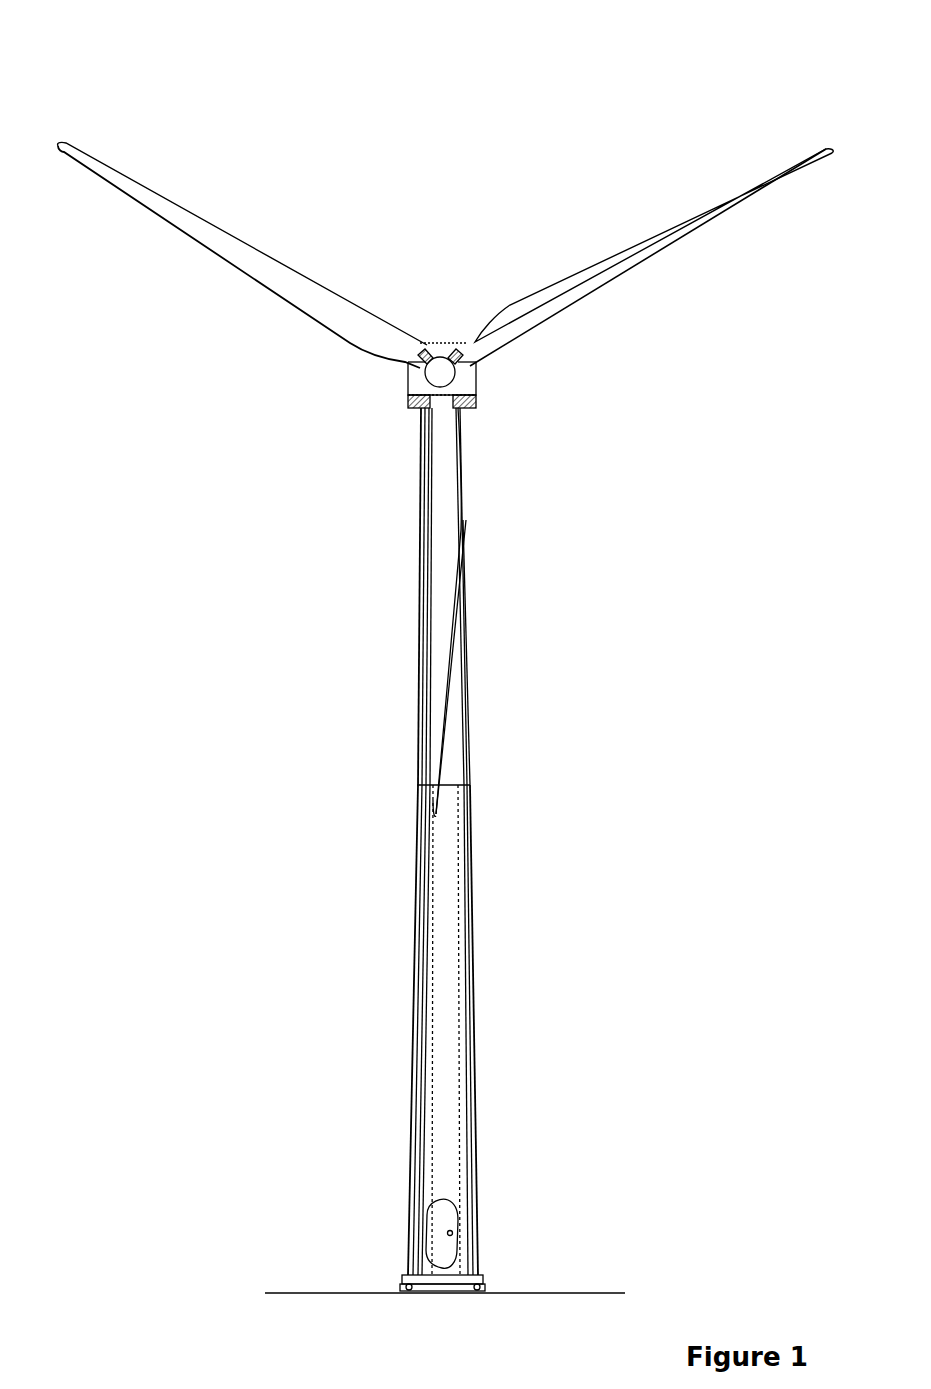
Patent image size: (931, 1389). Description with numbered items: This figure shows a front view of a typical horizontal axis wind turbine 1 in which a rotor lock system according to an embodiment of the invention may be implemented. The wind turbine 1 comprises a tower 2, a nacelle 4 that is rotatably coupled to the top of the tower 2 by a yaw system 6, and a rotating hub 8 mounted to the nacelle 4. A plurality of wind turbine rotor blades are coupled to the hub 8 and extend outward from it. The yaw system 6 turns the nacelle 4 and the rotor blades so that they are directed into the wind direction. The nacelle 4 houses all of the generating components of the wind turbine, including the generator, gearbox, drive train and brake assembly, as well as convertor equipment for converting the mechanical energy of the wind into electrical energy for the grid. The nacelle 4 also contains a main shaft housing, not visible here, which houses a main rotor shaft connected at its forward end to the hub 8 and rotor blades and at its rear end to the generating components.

The wind turbine 1 is at (117, 92).
The tower 2 is at (457, 952).
The nacelle 4 is at (437, 343).
The yaw system 6 is at (478, 409).
The rotating hub 8 is at (438, 371).